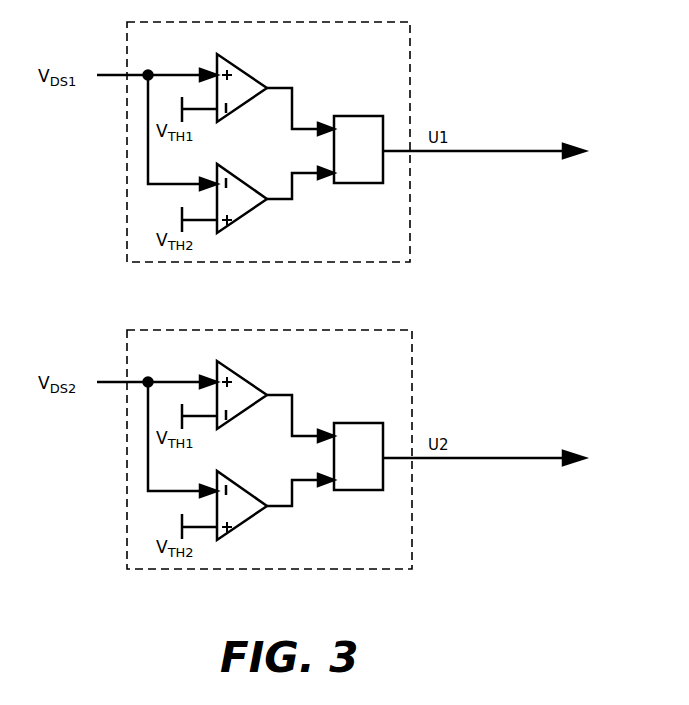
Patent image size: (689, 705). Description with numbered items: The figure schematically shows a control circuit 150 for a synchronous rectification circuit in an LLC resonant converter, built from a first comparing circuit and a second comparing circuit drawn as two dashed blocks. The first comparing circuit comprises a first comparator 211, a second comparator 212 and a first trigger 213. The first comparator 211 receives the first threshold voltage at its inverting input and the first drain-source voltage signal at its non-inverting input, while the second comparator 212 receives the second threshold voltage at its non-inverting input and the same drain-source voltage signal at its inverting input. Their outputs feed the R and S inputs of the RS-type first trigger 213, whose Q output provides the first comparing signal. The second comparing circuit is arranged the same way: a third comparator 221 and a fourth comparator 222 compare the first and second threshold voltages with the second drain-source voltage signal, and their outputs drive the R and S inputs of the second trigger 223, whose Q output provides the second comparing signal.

The control circuit 150 is at (410, 68).
The first comparator 211 is at (252, 70).
The second comparator 212 is at (250, 214).
The first trigger 213 is at (345, 184).
The third comparator 221 is at (252, 377).
The fourth comparator 222 is at (250, 521).
The second trigger 223 is at (345, 491).